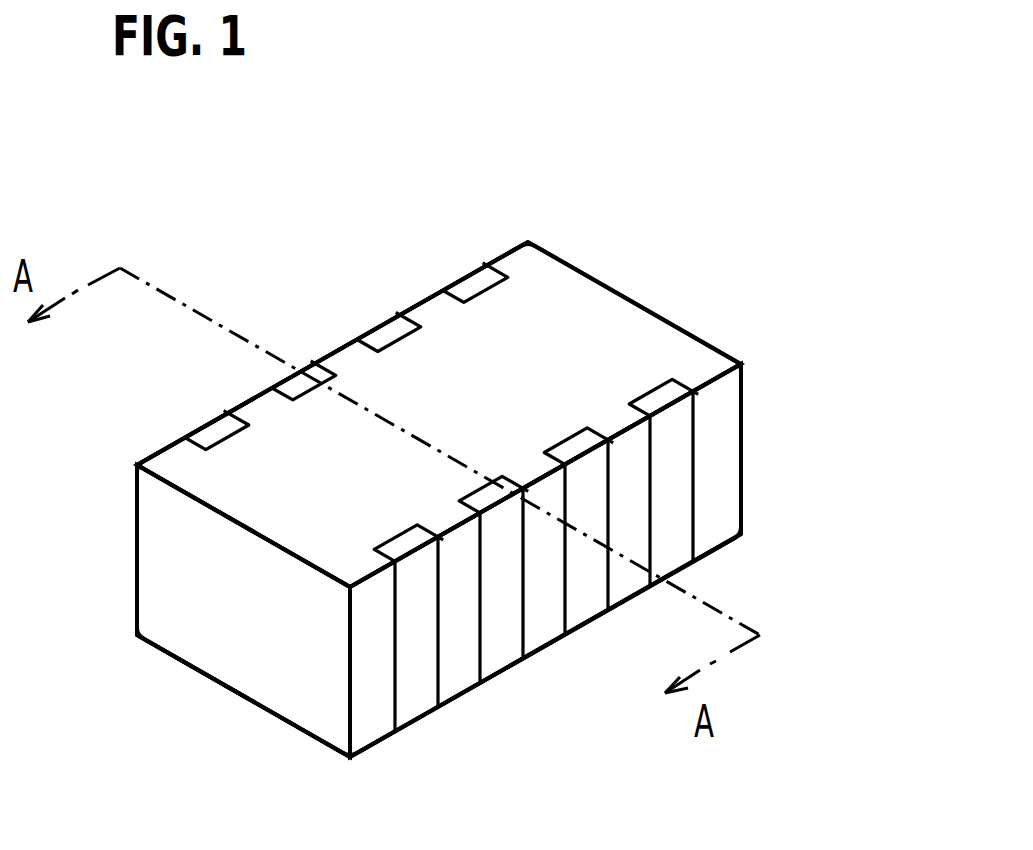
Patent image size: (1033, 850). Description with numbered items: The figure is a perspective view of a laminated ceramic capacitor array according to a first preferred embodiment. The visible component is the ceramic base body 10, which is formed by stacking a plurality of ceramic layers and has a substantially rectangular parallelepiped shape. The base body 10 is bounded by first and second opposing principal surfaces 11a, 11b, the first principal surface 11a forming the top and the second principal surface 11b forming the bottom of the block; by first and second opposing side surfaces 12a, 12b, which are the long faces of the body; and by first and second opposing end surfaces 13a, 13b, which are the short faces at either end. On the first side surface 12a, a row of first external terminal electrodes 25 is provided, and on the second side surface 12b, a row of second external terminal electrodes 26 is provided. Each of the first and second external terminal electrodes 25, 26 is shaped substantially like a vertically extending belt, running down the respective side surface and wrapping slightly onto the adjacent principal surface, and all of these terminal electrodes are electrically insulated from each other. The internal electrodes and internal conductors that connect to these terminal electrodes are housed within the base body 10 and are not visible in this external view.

The ceramic base body 10 is at (662, 308).
The first principal surface 11a is at (562, 292).
The second principal surface 11b is at (465, 695).
The first side surface 12a is at (163, 448).
The second side surface 12b is at (543, 630).
The first end surface 13a is at (267, 675).
The second end surface 13b is at (743, 440).
The first external terminal electrode 25 is at (372, 328).
The second external terminal electrode 26 is at (678, 513).